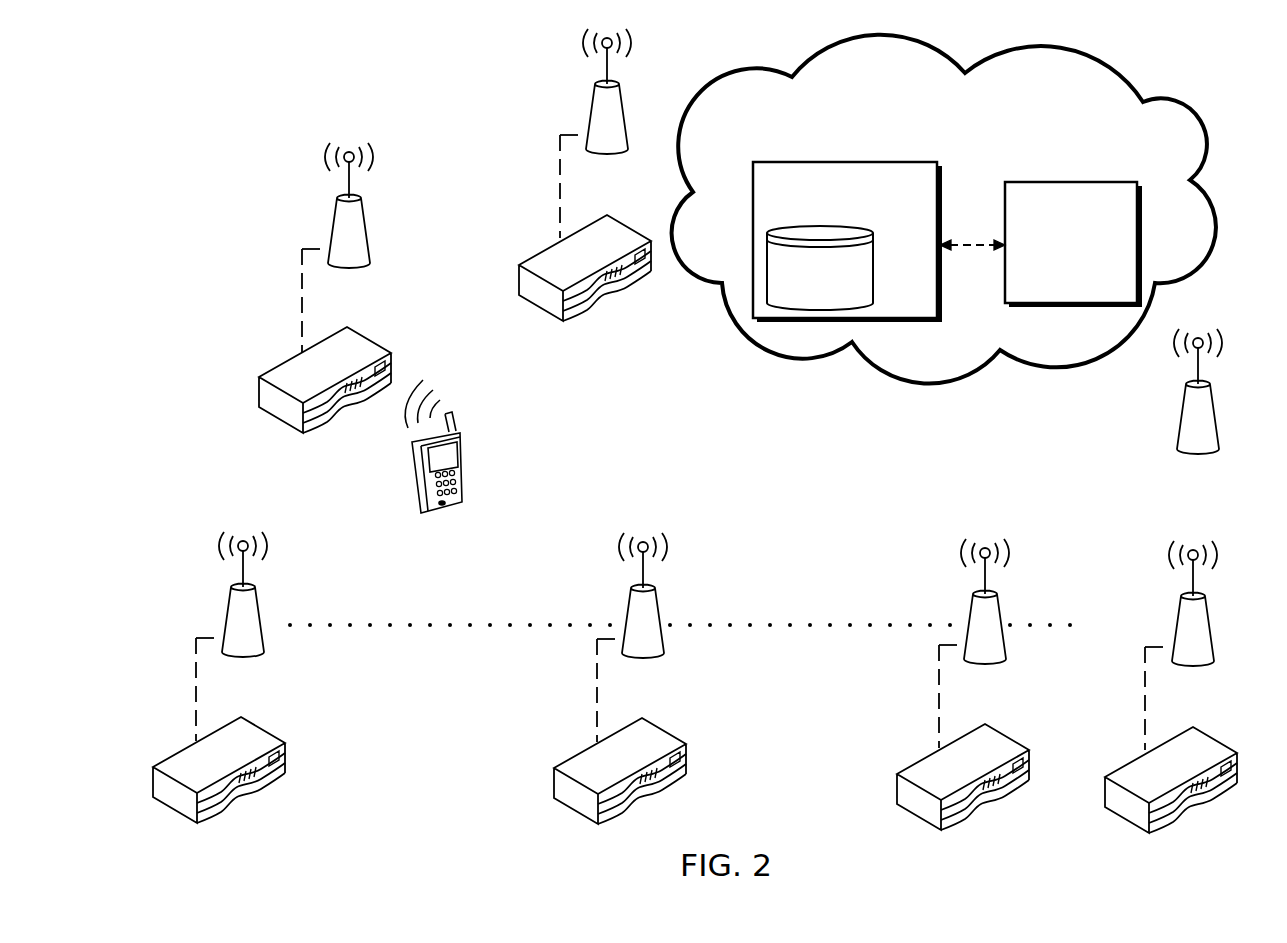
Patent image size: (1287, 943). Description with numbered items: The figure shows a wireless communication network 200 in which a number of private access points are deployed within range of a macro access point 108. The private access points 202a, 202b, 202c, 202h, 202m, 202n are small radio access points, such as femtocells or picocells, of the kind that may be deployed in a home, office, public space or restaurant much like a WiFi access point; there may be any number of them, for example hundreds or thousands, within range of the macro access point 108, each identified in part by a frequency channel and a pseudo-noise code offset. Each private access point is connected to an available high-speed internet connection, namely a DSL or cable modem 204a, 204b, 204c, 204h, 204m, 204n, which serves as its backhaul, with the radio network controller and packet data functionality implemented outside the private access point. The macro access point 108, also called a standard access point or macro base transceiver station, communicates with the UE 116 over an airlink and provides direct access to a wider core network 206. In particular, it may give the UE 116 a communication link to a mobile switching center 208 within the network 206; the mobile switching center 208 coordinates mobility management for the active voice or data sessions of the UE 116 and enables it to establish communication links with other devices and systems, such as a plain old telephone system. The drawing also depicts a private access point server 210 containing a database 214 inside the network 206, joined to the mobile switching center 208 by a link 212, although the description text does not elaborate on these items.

The wireless communication network 200 is at (198, 108).
The private access point 202a is at (590, 118).
The private access point 202b is at (333, 234).
The private access point 202c is at (226, 616).
The private access point 202h is at (625, 618).
The private access point 202m is at (967, 624).
The private access point 202n is at (1176, 626).
The DSL or cable modem 204a is at (534, 256).
The DSL or cable modem 204b is at (274, 368).
The DSL or cable modem 204c is at (168, 758).
The DSL or cable modem 204h is at (569, 759).
The DSL or cable modem 204m is at (912, 765).
The DSL or cable modem 204n is at (1120, 768).
The macro access point 108 is at (1215, 405).
The UE 116 is at (452, 504).
The core network 206 is at (930, 151).
The mobile switching center 208 is at (1092, 290).
The private access point server 210 is at (896, 311).
The communication link 212 is at (959, 235).
The database 214 is at (807, 301).